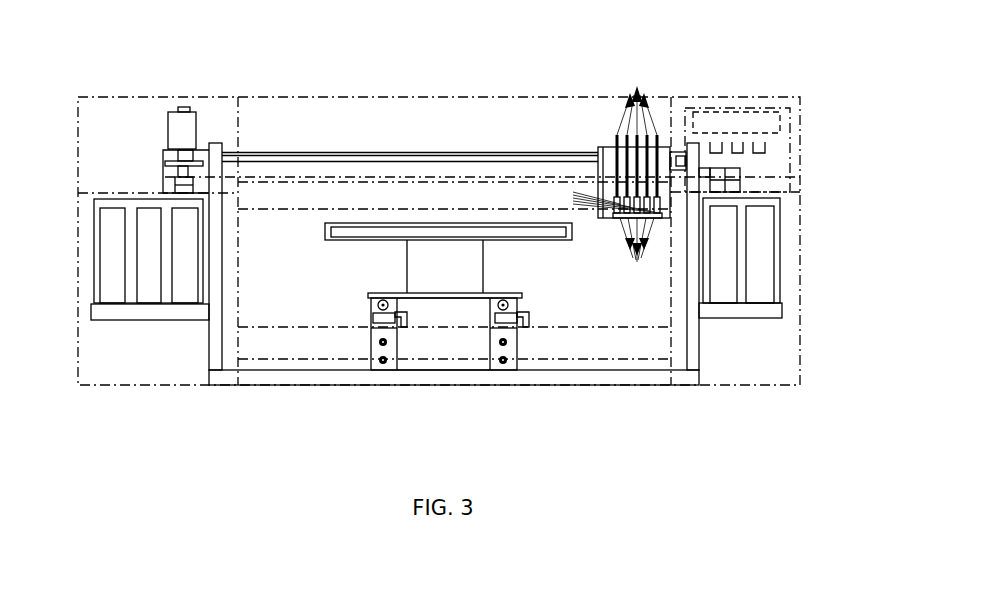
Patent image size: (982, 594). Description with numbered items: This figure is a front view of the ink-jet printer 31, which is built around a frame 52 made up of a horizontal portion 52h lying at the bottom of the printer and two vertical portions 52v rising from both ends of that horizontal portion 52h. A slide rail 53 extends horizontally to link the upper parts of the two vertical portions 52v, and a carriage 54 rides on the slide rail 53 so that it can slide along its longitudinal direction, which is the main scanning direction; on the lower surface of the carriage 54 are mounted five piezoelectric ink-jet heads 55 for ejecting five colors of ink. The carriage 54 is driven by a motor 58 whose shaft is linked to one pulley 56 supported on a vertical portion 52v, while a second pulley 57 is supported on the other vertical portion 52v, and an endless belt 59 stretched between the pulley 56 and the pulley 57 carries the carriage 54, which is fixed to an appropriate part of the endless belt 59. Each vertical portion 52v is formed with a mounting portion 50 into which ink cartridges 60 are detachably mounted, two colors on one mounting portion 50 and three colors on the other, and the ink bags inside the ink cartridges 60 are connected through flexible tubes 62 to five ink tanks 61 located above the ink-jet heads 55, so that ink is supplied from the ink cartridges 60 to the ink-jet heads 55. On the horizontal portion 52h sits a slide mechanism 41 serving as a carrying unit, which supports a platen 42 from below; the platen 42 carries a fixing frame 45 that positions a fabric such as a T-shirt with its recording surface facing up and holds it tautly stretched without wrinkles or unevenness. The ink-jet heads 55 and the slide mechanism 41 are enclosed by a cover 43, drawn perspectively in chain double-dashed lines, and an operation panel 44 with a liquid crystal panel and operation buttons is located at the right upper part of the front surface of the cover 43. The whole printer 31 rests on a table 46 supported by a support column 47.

The ink-jet printer 31 is at (804, 60).
The slide mechanism 41 is at (373, 312).
The platen 42 is at (497, 237).
The cover 43 is at (305, 97).
The operation panel 44 is at (788, 137).
The fixing frame 45 is at (575, 239).
The table 46 is at (352, 232).
The support column 47 is at (483, 280).
The mounting portion 50 is at (100, 312).
The frame 52 is at (462, 304).
The horizontal portion 52h is at (693, 378).
The vertical portion 52v is at (212, 355).
The slide rail 53 is at (420, 158).
The carriage 54 is at (608, 150).
The piezoelectric ink-jet head 55 is at (637, 251).
The pulley 56 is at (167, 187).
The pulley 57 is at (740, 180).
The motor 58 is at (197, 112).
The endless belt 59 is at (375, 170).
The ink cartridge 60 is at (180, 258).
The ink tank 61 is at (594, 198).
The flexible tube 62 is at (637, 135).